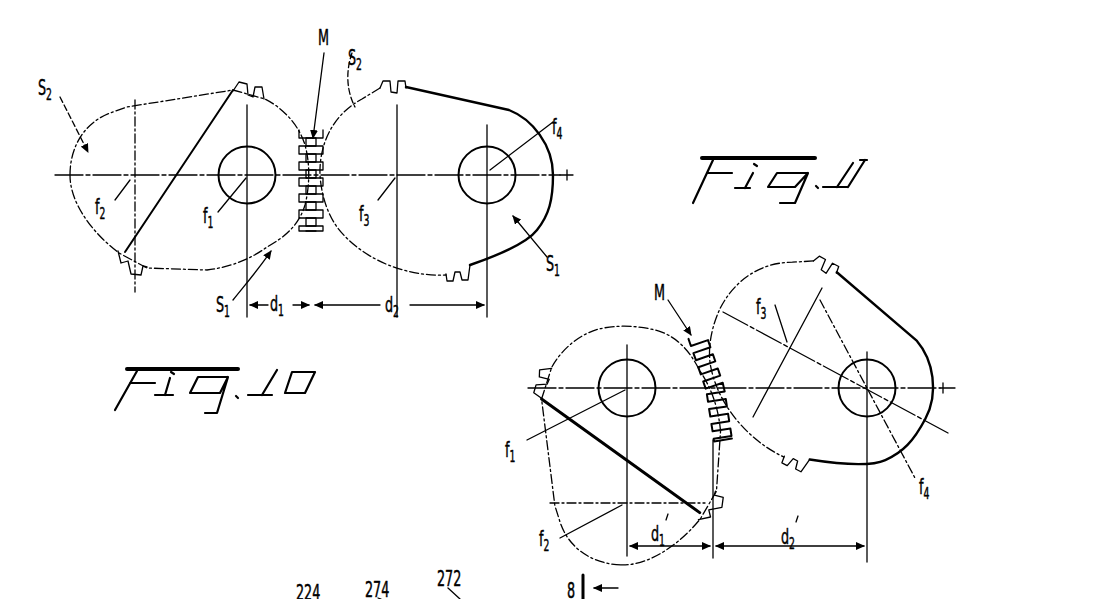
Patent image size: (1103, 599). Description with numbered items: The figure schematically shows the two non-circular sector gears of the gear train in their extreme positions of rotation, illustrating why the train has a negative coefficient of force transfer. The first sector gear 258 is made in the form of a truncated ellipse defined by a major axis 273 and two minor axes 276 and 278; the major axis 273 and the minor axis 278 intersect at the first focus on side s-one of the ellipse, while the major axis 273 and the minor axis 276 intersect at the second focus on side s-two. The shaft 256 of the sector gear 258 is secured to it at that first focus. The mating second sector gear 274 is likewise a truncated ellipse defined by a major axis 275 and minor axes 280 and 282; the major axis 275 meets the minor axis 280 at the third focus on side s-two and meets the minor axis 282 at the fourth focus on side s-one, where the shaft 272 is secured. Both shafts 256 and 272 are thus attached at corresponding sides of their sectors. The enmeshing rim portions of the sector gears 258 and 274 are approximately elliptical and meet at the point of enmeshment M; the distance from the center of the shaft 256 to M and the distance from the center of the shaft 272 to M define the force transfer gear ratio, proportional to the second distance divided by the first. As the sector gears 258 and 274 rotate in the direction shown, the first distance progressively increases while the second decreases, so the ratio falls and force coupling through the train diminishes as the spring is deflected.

In FIG. 10, the shaft 256 is at (258, 155).
In FIG. 11, the shaft 256 is at (633, 360).
In FIG. 10, the sector gear 258 is at (160, 277).
In FIG. 11, the sector gear 258 is at (702, 442).
In FIG. 10, the shaft 272 is at (500, 187).
In FIG. 10, the major axis 273 is at (55, 176).
In FIG. 11, the major axis 273 is at (528, 390).
In FIG. 10, the sector gear 274 is at (463, 112).
In FIG. 11, the sector gear 274 is at (873, 318).
In FIG. 10, the major axis 275 is at (568, 172).
In FIG. 11, the major axis 275 is at (943, 392).
In FIG. 10, the minor axis 276 is at (135, 133).
In FIG. 11, the minor axis 276 is at (573, 500).
In FIG. 10, the minor axis 278 is at (247, 120).
In FIG. 11, the minor axis 278 is at (628, 555).
In FIG. 10, the minor axis 280 is at (397, 133).
In FIG. 11, the minor axis 280 is at (824, 290).
In FIG. 10, the minor axis 282 is at (487, 133).
In FIG. 11, the minor axis 282 is at (868, 353).